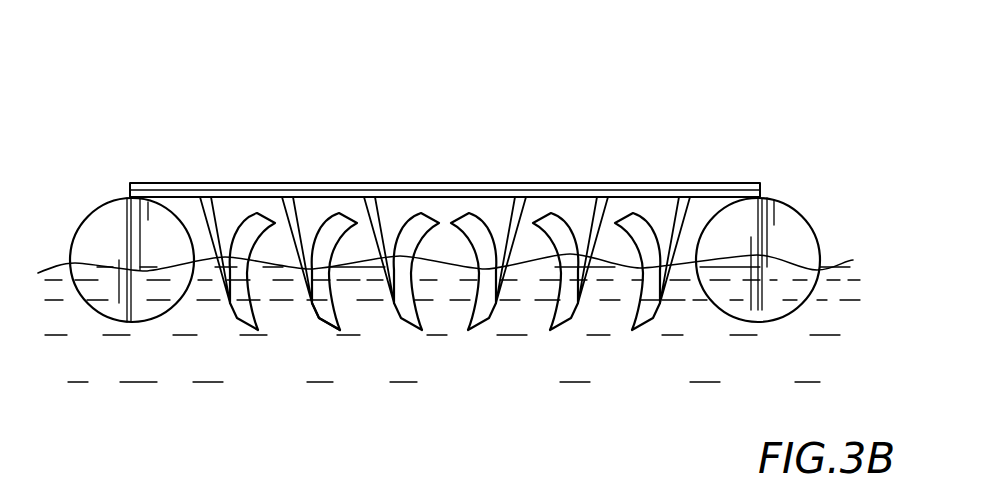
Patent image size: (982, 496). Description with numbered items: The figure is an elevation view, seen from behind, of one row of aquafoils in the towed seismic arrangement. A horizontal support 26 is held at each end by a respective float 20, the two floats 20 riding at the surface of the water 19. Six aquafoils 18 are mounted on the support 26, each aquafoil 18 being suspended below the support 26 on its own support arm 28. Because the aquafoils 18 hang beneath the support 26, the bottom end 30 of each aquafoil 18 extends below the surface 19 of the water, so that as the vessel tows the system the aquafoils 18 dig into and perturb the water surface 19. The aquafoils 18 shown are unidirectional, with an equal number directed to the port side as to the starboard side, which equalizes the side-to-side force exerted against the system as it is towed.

The aquafoil 18 is at (337, 313).
The surface of the water 19 is at (288, 265).
The float 20 is at (98, 223).
The support 26 is at (456, 183).
The support arm 28 is at (218, 217).
The bottom end 30 is at (330, 327).